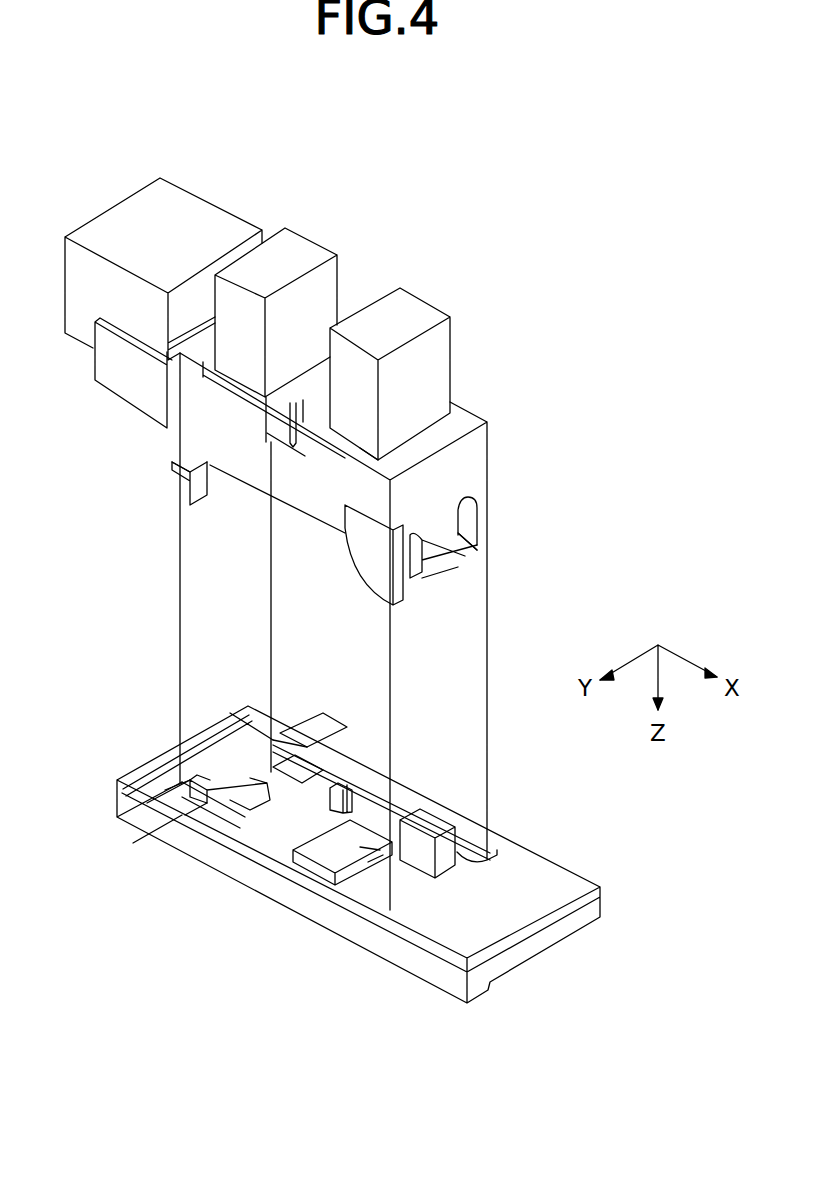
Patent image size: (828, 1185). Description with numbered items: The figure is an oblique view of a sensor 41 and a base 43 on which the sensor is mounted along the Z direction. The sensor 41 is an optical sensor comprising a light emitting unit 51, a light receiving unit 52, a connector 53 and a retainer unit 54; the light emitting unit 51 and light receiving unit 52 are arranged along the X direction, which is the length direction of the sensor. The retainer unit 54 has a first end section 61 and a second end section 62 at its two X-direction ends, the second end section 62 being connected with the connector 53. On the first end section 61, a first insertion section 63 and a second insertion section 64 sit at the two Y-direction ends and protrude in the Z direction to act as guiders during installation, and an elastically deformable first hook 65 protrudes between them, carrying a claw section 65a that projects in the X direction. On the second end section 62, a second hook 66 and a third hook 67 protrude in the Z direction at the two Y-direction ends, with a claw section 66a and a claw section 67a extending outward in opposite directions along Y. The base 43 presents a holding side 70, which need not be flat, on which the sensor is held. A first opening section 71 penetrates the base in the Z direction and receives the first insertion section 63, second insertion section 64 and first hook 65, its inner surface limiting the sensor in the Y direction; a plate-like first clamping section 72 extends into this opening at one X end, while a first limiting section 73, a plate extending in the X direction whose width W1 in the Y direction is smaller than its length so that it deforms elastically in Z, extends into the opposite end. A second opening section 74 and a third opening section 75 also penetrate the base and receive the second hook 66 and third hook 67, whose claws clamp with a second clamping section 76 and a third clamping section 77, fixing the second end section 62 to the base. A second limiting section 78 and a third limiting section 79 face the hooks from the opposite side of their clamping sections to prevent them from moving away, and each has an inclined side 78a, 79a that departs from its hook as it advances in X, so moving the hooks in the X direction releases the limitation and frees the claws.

The sensor 41 is at (383, 270).
The base 43 is at (562, 857).
The light emitting unit 51 is at (418, 305).
The light receiving unit 52 is at (302, 237).
The connector 53 is at (123, 213).
The retainer unit 54 is at (485, 413).
The first end section 61 is at (474, 460).
The second end section 62 is at (195, 432).
The first insertion section 63 is at (376, 573).
The second insertion section 64 is at (489, 511).
The first hook 65 is at (443, 580).
The claw section 65a is at (467, 553).
The second hook 66 is at (198, 512).
The claw section 66a is at (173, 470).
The third hook 67 is at (380, 379).
The claw section 67a is at (318, 418).
The holding side 70 is at (507, 873).
The first opening section 71 is at (340, 905).
The first clamping section 72 is at (449, 808).
The first limiting section 73 is at (367, 856).
The second opening section 74 is at (190, 827).
The third opening section 75 is at (295, 725).
The second clamping section 76 is at (170, 803).
The third clamping section 77 is at (288, 733).
The second limiting section 78 is at (180, 743).
The inclined side 78a is at (219, 790).
The third limiting section 79 is at (260, 750).
The inclined side 79a is at (317, 745).
The width W1 is at (368, 862).